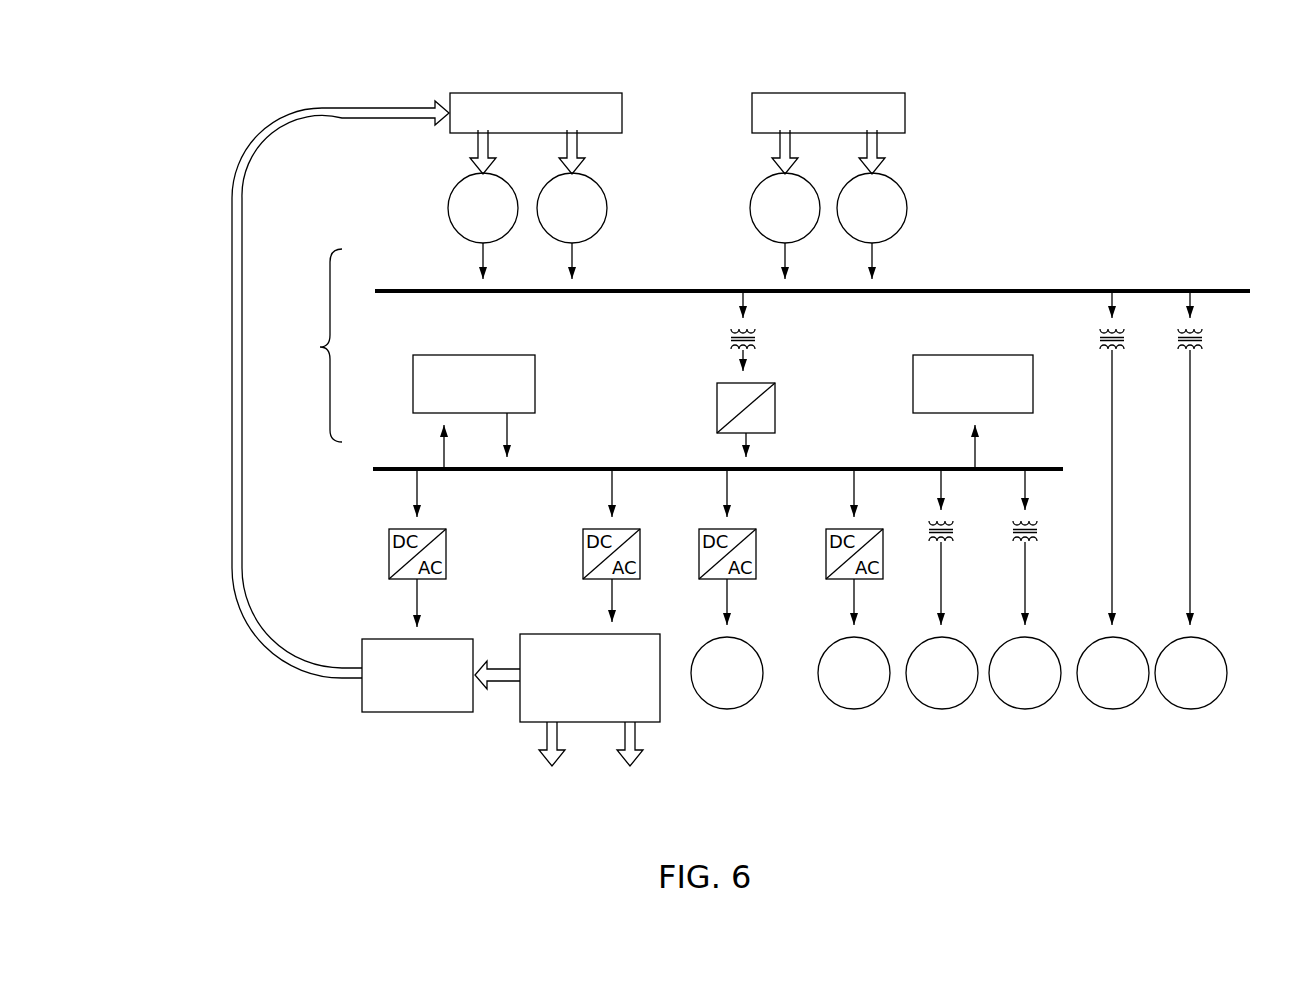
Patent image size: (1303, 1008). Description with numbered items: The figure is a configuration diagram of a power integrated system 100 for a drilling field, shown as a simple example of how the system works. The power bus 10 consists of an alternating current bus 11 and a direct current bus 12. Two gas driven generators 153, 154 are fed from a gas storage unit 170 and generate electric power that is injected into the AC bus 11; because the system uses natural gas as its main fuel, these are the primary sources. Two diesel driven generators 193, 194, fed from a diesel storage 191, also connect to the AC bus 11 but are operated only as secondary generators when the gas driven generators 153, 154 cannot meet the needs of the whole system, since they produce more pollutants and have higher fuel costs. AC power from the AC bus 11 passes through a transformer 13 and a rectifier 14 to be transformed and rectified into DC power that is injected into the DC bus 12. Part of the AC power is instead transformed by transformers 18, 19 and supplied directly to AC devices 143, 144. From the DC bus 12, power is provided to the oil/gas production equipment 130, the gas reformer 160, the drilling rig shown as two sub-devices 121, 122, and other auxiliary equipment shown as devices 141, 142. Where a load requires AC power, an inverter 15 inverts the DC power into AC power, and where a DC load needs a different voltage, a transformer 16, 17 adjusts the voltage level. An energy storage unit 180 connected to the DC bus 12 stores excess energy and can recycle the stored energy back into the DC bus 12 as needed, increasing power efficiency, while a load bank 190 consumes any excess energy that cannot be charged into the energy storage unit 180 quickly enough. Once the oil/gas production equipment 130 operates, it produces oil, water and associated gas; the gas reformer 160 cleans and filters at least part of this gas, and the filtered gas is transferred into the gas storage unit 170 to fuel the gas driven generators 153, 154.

The power integrated system 100 is at (228, 100).
The power bus 10 is at (315, 345).
The alternating current (AC) bus 11 is at (405, 291).
The direct current (DC) bus 12 is at (395, 469).
The transformer 13 is at (722, 336).
The rectifier 14 is at (717, 405).
The inverter 15 is at (438, 529).
The transformer 16 is at (958, 523).
The transformer 17 is at (1043, 523).
The transformer 18 is at (1092, 333).
The transformer 19 is at (1170, 333).
The sub-device of drilling rig 121 is at (727, 709).
The sub-device of drilling rig 122 is at (854, 709).
The oil/gas production equipment 130 is at (576, 634).
The auxiliary equipment device 141 is at (942, 709).
The auxiliary equipment device 142 is at (1025, 709).
The AC device 143 is at (1113, 709).
The AC device 144 is at (1191, 709).
The gas driven generator 153 is at (449, 208).
The gas driven generator 154 is at (606, 208).
The gas reformer 160 is at (382, 639).
The gas storage unit 170 is at (526, 93).
The energy storage unit 180 is at (471, 355).
The load bank 190 is at (971, 355).
The diesel storage 191 is at (826, 93).
The diesel driven generator 193 is at (751, 208).
The diesel driven generator 194 is at (906, 208).